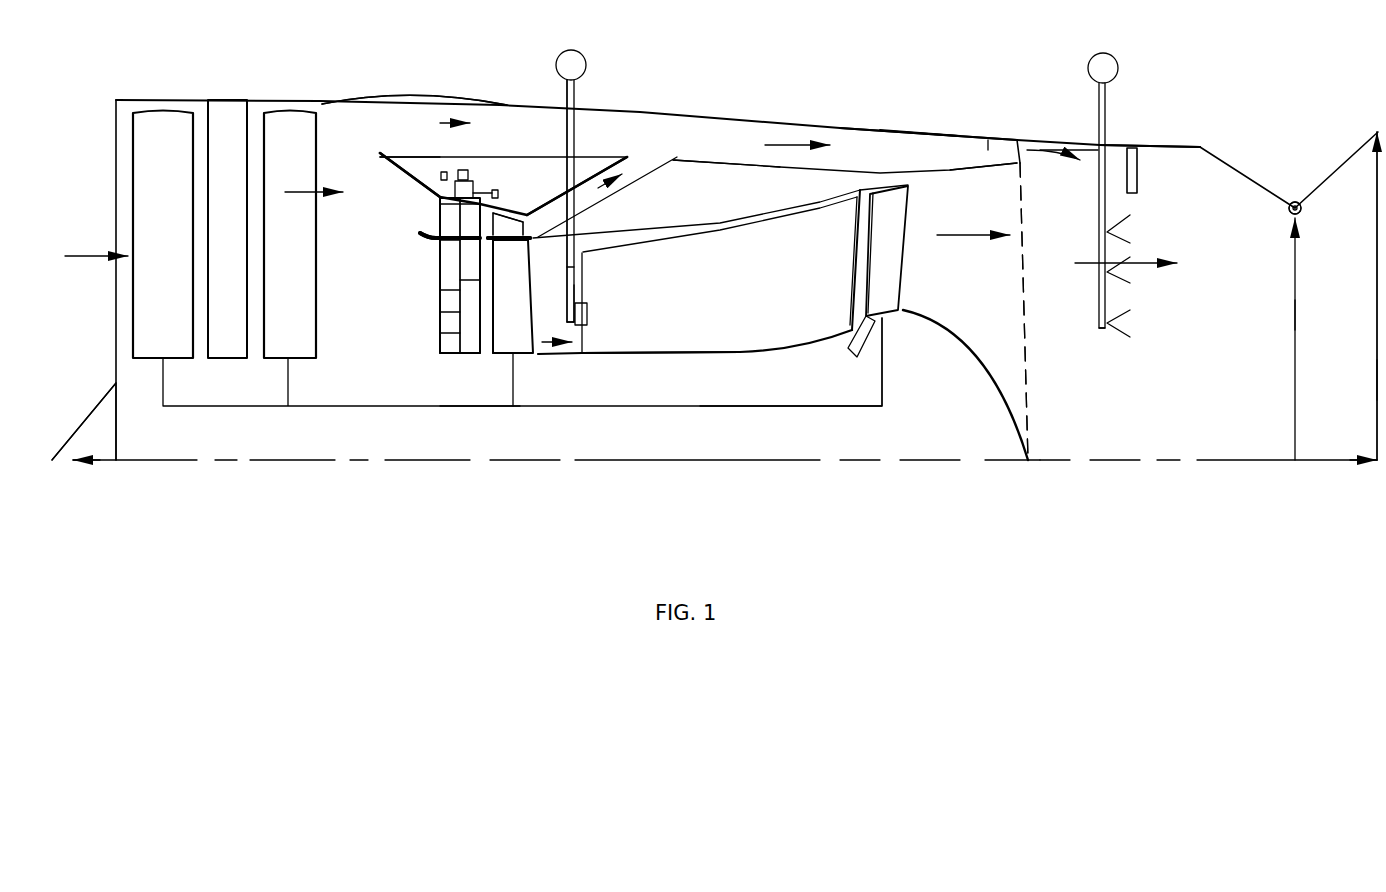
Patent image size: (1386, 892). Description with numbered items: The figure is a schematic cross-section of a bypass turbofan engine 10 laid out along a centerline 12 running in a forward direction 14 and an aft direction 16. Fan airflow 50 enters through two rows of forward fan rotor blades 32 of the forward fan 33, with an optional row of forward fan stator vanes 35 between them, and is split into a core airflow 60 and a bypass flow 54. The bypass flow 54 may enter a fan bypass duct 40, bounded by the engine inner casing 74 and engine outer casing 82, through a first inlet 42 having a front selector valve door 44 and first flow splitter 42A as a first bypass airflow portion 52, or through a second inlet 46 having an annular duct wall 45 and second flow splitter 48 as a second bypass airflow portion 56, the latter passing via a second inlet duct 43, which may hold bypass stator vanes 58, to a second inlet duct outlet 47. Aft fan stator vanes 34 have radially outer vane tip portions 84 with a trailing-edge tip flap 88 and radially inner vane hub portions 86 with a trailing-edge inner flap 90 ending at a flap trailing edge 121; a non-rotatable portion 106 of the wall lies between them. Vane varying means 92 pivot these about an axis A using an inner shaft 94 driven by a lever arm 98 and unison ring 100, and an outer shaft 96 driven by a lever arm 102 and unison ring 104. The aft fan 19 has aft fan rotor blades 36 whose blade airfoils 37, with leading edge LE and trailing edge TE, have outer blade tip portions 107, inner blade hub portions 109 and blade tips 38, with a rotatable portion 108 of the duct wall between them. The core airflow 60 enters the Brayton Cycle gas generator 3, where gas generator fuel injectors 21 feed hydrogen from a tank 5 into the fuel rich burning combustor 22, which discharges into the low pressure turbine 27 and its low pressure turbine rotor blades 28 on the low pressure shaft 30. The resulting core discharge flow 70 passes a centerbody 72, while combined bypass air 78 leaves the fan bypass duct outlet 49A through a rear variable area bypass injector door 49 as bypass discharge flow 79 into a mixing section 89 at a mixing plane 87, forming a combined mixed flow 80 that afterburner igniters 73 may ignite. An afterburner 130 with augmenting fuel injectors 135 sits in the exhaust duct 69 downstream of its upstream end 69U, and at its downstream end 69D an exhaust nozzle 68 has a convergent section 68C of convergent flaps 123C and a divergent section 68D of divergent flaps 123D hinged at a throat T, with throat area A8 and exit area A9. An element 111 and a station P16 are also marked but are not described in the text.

The Brayton Cycle gas generator 3 is at (703, 363).
The tank 5 is at (580, 53).
The bypass turbofan engine 10 is at (688, 103).
The centerline 12 is at (590, 465).
The forward direction 14 is at (123, 460).
The aft direction 16 is at (1323, 462).
The aft fan 19 is at (457, 408).
The gas generator fuel injectors 21 is at (587, 315).
The fuel rich burning combustor 22 is at (720, 303).
The low pressure turbine 27 is at (840, 343).
The low pressure turbine rotor blades 28 is at (888, 302).
The low pressure shaft 30 is at (825, 407).
The forward fan rotor blades 32 is at (173, 211).
The forward fan 33 is at (240, 388).
The aft fan stator vanes 34 is at (442, 356).
The forward fan stator vanes 35 is at (227, 117).
The aft fan rotor blades 36 is at (507, 357).
The blade airfoils 37 is at (447, 291).
The blade tips 38 is at (498, 225).
The fan bypass duct 40 is at (848, 148).
The first inlet 42 is at (367, 136).
The first flow splitter 42A is at (380, 152).
The second inlet duct 43 is at (645, 170).
The front selector valve door 44 is at (388, 108).
The annular duct wall 45 is at (463, 286).
The second inlet 46 is at (437, 213).
The second inlet duct outlet 47 is at (677, 160).
The second flow splitter 48 is at (420, 233).
The rear variable area bypass injector door 49 is at (1003, 160).
The fan bypass duct outlet 49A is at (975, 160).
The fan airflow 50 is at (97, 258).
The first bypass airflow portion 52 is at (440, 123).
The bypass flow 54 is at (305, 192).
The second bypass airflow portion 56 is at (613, 185).
The bypass stator vanes 58 is at (580, 208).
The core airflow 60 is at (548, 343).
The exhaust nozzle 68 is at (1297, 142).
The convergent section 68C is at (1278, 279).
The divergent section 68D is at (1360, 307).
The exhaust duct 69 is at (1115, 147).
The downstream end of exhaust duct 69D is at (1192, 150).
The upstream end of exhaust duct 69U is at (1085, 246).
The core discharge flow 70 is at (970, 235).
The centerbody 72 is at (998, 368).
The afterburner igniters 73 is at (1138, 175).
The engine inner casing 74 is at (608, 150).
The combined bypass air 78 is at (772, 145).
The bypass discharge flow 79 is at (1040, 153).
The combined mixed flow 80 is at (1140, 265).
The engine outer casing 82 is at (918, 130).
The radially outer vane tip portions 84 is at (457, 204).
The radially inner vane hub portions 86 is at (438, 346).
The mixing plane 87 is at (1023, 290).
The trailing-edge tip flap 88 is at (467, 221).
The mixing section 89 is at (1073, 450).
The trailing-edge inner flap 90 is at (455, 333).
The vane varying means 92 is at (468, 158).
The inner shaft 94 is at (478, 170).
The outer shaft 96 is at (440, 194).
The lever arm 98 is at (442, 172).
The unison ring 100 is at (457, 174).
The lever arm 102 is at (478, 178).
The unison ring 104 is at (483, 187).
The non-rotatable portion 106 is at (440, 246).
The outer blade tip portions 107 is at (503, 218).
The rotatable portion 108 is at (568, 267).
The inner blade hub portions 109 is at (522, 342).
The probe stem 111 is at (588, 133).
The flap trailing edge 121 is at (455, 312).
The convergent flaps 123C is at (1230, 157).
The divergent flaps 123D is at (1340, 167).
The afterburner 130 is at (1112, 345).
The augmenting fuel injectors 135 is at (1122, 237).
The axis A is at (488, 254).
The throat area A8 is at (1293, 312).
The exit area A9 is at (1376, 377).
The leading edge LE is at (488, 345).
The pressure station P16 is at (988, 150).
The throat T is at (1295, 192).
The trailing edge TE is at (575, 288).